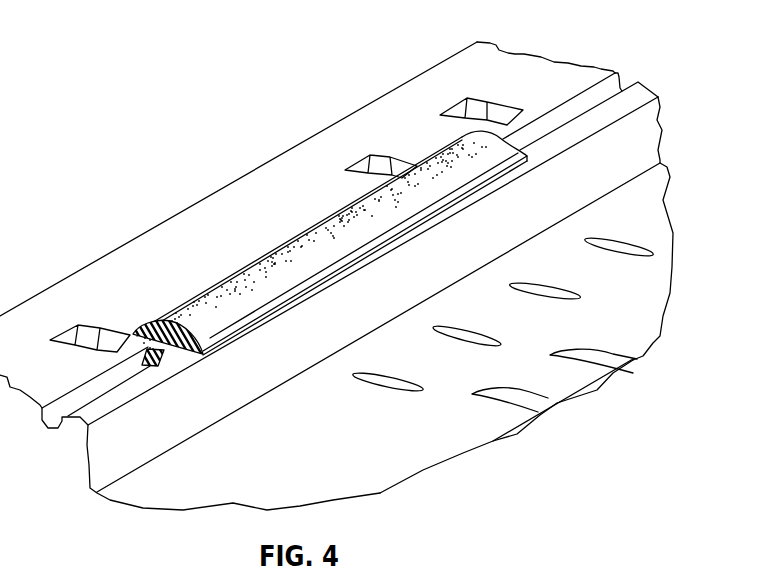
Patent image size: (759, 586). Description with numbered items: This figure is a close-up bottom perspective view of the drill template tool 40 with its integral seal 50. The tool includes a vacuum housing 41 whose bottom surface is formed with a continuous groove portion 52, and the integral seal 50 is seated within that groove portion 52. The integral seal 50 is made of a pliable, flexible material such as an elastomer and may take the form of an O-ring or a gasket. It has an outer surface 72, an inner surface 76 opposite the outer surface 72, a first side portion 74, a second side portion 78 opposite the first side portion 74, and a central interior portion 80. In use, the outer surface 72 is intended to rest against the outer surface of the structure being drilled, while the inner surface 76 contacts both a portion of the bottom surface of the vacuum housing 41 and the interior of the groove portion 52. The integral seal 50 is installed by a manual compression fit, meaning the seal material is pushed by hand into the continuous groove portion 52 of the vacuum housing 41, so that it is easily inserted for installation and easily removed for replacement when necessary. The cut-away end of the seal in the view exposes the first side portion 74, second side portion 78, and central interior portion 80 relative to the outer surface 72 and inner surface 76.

The drill template tool 40 is at (273, 112).
The vacuum housing 41 is at (375, 92).
The integral seal 50 is at (286, 340).
The groove portion 52 is at (346, 252).
The outer surface 72 is at (203, 292).
The first side portion 74 is at (263, 313).
The inner surface 76 is at (185, 355).
The second side portion 78 is at (141, 334).
The central interior portion 80 is at (112, 388).